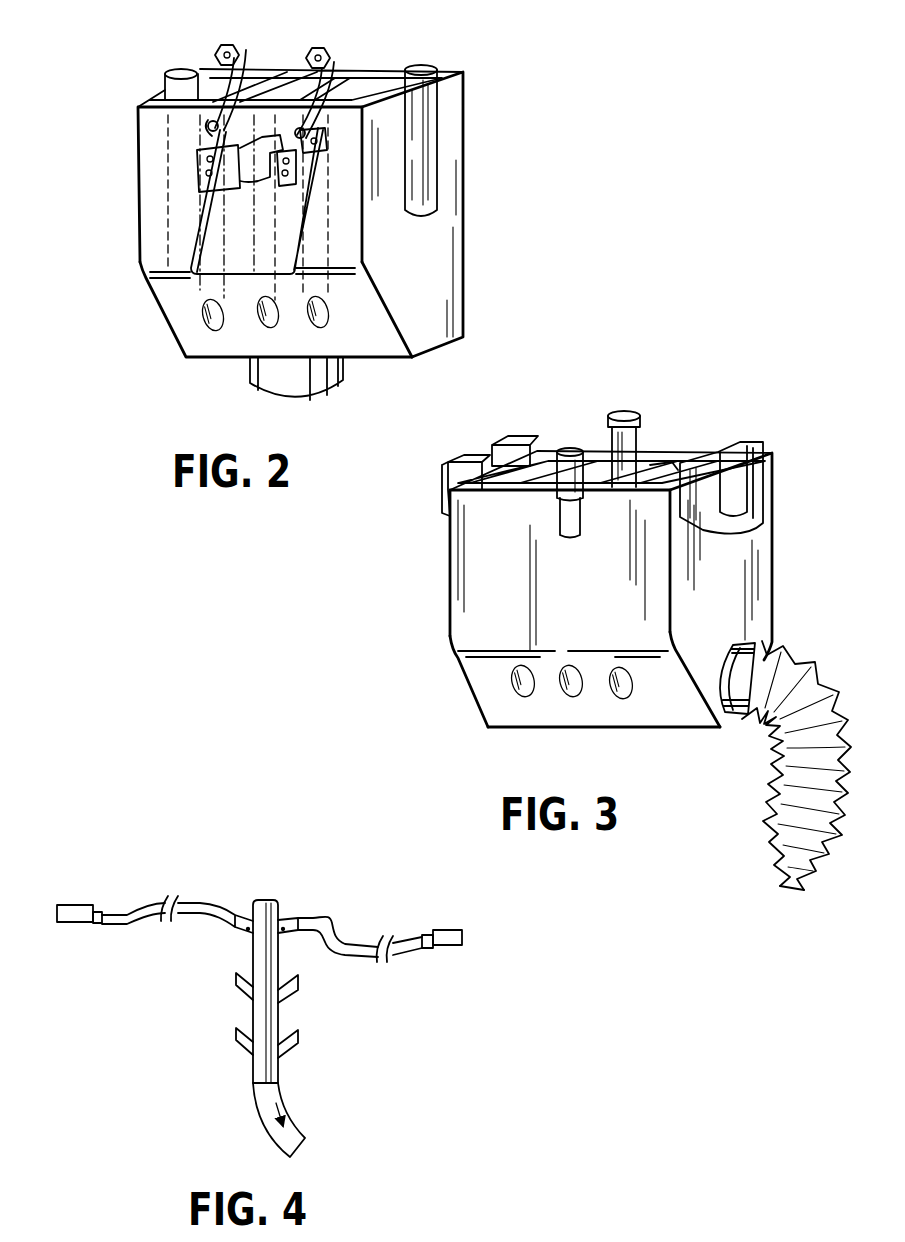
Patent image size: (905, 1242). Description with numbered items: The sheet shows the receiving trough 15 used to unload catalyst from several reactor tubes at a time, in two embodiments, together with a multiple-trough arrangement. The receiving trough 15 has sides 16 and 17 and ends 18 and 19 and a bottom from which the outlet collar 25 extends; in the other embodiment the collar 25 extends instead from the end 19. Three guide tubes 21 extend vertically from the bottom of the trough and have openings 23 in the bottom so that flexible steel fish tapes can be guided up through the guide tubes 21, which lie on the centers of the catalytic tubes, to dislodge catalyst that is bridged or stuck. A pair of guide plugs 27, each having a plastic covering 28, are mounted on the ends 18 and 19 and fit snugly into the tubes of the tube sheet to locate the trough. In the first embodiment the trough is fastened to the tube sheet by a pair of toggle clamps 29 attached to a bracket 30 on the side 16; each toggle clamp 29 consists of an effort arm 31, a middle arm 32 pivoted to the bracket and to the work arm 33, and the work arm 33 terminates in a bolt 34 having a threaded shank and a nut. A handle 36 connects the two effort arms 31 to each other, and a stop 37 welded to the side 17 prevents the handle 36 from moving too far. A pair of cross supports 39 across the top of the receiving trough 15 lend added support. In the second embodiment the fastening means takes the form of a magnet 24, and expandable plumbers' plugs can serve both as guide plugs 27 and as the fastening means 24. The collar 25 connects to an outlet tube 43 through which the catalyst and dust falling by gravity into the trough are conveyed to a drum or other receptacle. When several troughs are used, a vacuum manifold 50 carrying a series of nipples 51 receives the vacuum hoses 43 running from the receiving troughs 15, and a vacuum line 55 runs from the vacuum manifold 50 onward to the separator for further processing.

In FIG. 2, the receiving trough 15 is at (468, 208).
In FIG. 3, the receiving trough 15 is at (443, 597).
In FIG. 4, the receiving trough 15 is at (80, 912).
In FIG. 2, the side 16 is at (372, 330).
In FIG. 3, the side 16 is at (470, 652).
In FIG. 2, the side 17 is at (393, 90).
In FIG. 2, the end 18 is at (446, 283).
In FIG. 3, the end 18 is at (757, 582).
In FIG. 2, the end 19 is at (208, 92).
In FIG. 2, the guide tubes 21 is at (215, 287).
In FIG. 2, the openings 23 is at (252, 337).
In FIG. 3, the openings 23 is at (560, 712).
In FIG. 3, the magnet 24 is at (447, 463).
In FIG. 2, the outlet collar 25 is at (275, 380).
In FIG. 3, the outlet collar 25 is at (733, 680).
In FIG. 4, the outlet collar 25 is at (99, 923).
In FIG. 2, the guide plugs 27 is at (413, 188).
In FIG. 3, the guide plugs 27 is at (570, 520).
In FIG. 3, the plastic covering 28 is at (640, 420).
In FIG. 2, the toggle clamps 29 is at (182, 207).
In FIG. 2, the bracket 30 is at (323, 147).
In FIG. 2, the effort arm 31 is at (215, 144).
In FIG. 2, the middle arm 32 is at (240, 95).
In FIG. 2, the work arm 33 is at (330, 74).
In FIG. 2, the bolt 34 is at (226, 46).
In FIG. 2, the handle 36 is at (256, 243).
In FIG. 2, the stop 37 is at (245, 170).
In FIG. 2, the cross supports 39 is at (270, 80).
In FIG. 3, the cross supports 39 is at (670, 473).
In FIG. 3, the outlet tube 43 is at (785, 790).
In FIG. 4, the outlet tube 43 is at (208, 912).
In FIG. 4, the vacuum manifold 50 is at (268, 912).
In FIG. 4, the nipples 51 is at (238, 1033).
In FIG. 4, the vacuum line 55 is at (280, 1100).